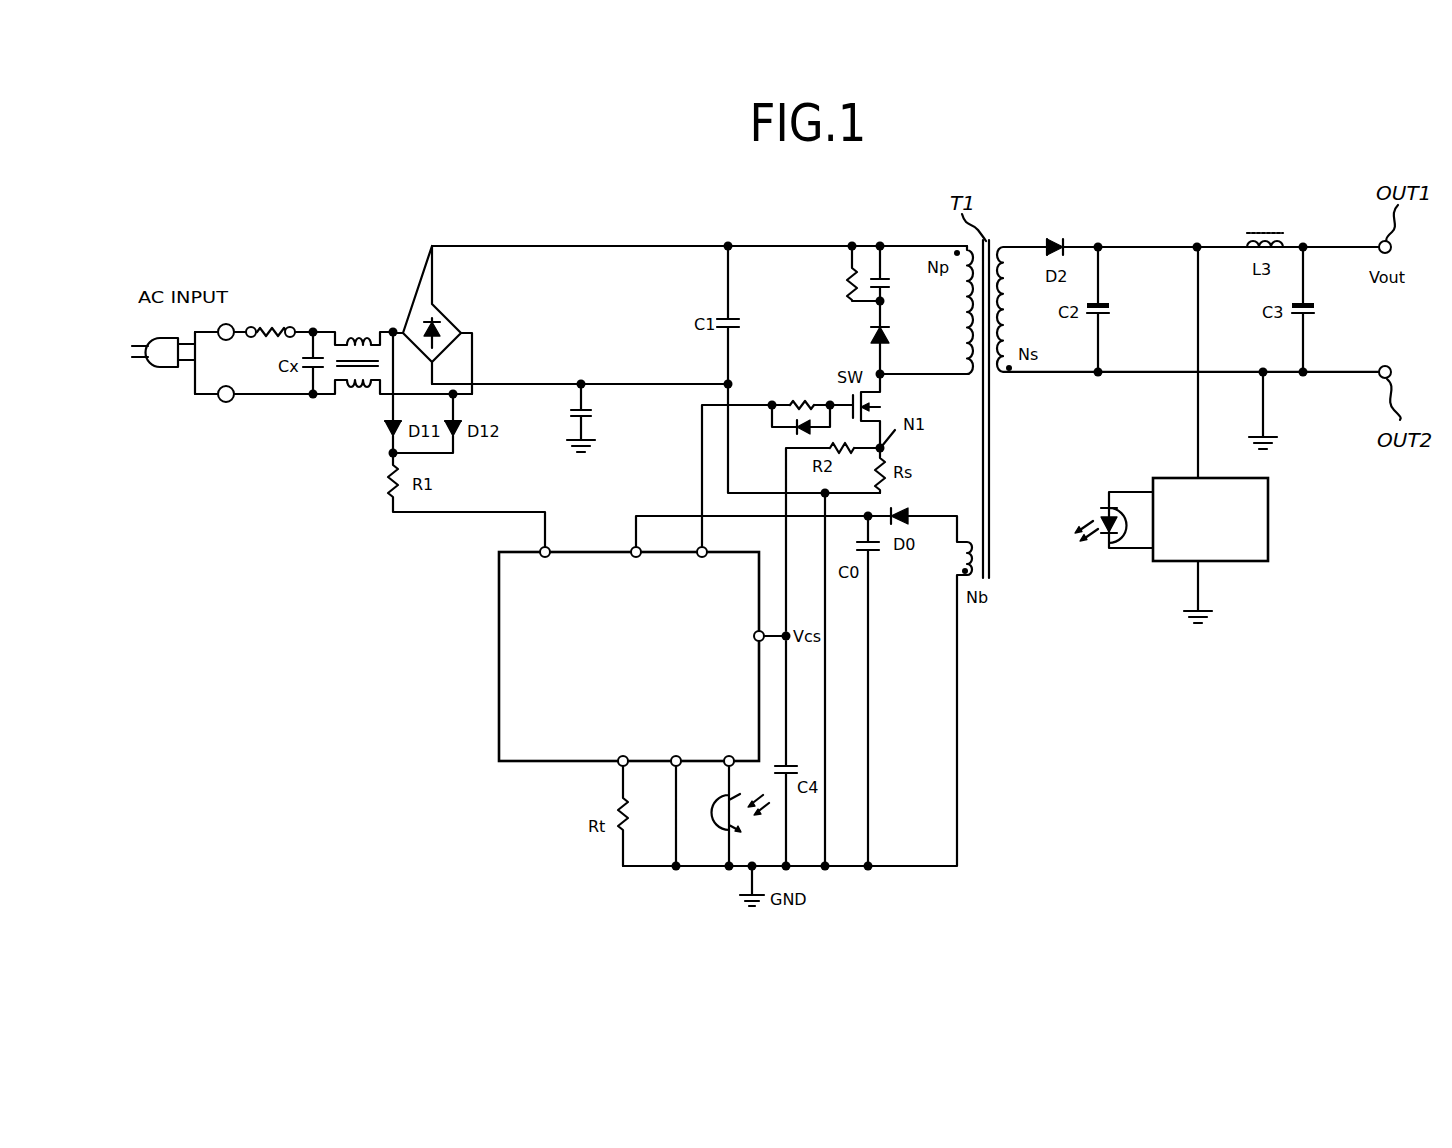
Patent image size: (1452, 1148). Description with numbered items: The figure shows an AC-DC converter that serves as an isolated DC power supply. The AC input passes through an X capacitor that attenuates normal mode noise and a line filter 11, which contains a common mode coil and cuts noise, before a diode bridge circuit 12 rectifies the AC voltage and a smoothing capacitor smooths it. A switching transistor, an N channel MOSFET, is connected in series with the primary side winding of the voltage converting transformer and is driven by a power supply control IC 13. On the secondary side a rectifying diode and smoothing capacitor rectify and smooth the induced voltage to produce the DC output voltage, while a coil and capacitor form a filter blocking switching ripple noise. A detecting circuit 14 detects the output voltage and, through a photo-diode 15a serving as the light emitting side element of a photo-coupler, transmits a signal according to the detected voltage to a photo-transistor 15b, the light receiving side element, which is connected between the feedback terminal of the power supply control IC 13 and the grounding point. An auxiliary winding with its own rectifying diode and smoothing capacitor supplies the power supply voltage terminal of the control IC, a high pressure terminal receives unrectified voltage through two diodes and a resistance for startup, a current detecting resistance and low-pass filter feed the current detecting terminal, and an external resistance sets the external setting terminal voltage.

The line filter 11 is at (348, 397).
The diode bridge circuit 12 is at (407, 302).
The power supply control IC 13 is at (499, 670).
The detecting circuit 14 is at (1270, 540).
The photo-diode 15a is at (1096, 546).
The photo-transistor 15b is at (718, 835).